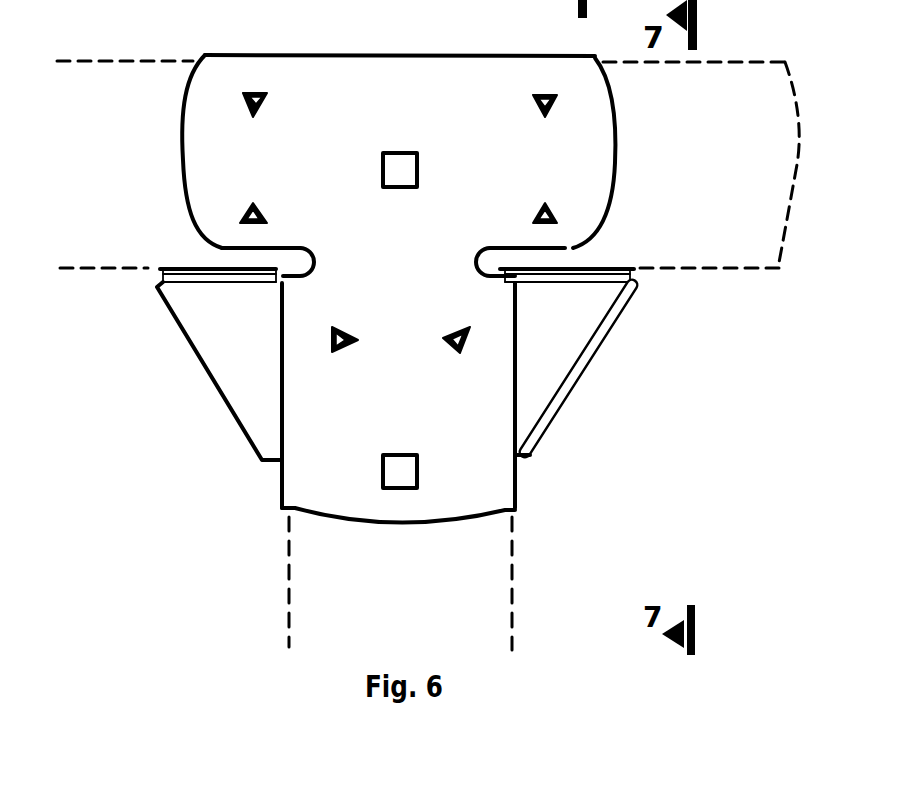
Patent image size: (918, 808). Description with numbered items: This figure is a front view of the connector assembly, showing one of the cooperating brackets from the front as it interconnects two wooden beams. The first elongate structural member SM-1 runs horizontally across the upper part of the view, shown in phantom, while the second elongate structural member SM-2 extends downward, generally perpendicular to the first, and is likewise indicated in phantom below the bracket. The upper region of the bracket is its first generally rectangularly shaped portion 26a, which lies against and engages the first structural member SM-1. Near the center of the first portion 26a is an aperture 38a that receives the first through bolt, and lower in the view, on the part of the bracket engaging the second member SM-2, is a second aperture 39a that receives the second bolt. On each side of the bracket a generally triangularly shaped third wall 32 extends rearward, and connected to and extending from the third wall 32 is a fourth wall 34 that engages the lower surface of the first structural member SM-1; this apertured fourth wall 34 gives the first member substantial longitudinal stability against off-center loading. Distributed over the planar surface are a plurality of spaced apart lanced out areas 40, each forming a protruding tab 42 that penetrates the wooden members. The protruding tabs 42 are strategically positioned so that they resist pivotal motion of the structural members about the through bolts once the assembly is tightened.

The first generally rectangularly shaped portion 26a is at (398, 289).
The third wall 32 is at (215, 345).
The fourth wall 34 is at (200, 268).
The aperture 38a is at (418, 168).
The aperture 39a is at (396, 476).
The lanced out area 40 is at (252, 96).
The protruding tab 42 is at (265, 110).
The first elongate structural member SM-1 is at (720, 98).
The second elongate structural member SM-2 is at (472, 568).